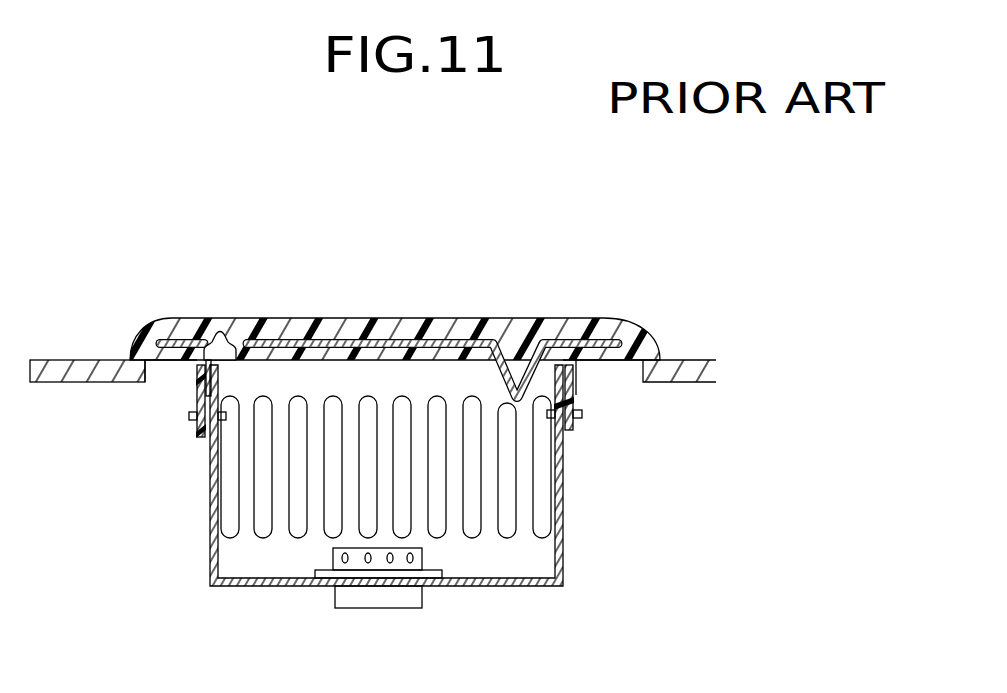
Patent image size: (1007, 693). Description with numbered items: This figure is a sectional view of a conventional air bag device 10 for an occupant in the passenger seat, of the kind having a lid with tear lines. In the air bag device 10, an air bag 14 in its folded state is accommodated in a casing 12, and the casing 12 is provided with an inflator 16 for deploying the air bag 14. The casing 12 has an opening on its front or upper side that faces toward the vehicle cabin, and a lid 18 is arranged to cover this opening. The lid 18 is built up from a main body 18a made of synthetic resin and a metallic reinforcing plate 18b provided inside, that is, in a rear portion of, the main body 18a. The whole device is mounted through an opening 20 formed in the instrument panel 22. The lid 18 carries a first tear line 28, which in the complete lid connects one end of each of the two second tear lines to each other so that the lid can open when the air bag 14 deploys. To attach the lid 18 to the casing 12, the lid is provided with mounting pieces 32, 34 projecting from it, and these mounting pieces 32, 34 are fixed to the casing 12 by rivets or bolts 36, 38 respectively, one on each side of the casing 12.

The air bag device 10 is at (396, 443).
The casing 12 is at (563, 455).
The air bag 14 is at (525, 540).
The inflator 16 is at (415, 608).
The lid 18 is at (454, 306).
The main body 18a is at (483, 328).
The reinforcing plate 18b is at (388, 328).
The opening 20 is at (148, 383).
The instrument panel 22 is at (77, 352).
The first tear line 28 is at (210, 342).
The mounting piece 32 is at (197, 398).
The mounting piece 34 is at (573, 397).
The rivet or bolt 36 is at (195, 420).
The rivet or bolt 38 is at (582, 415).